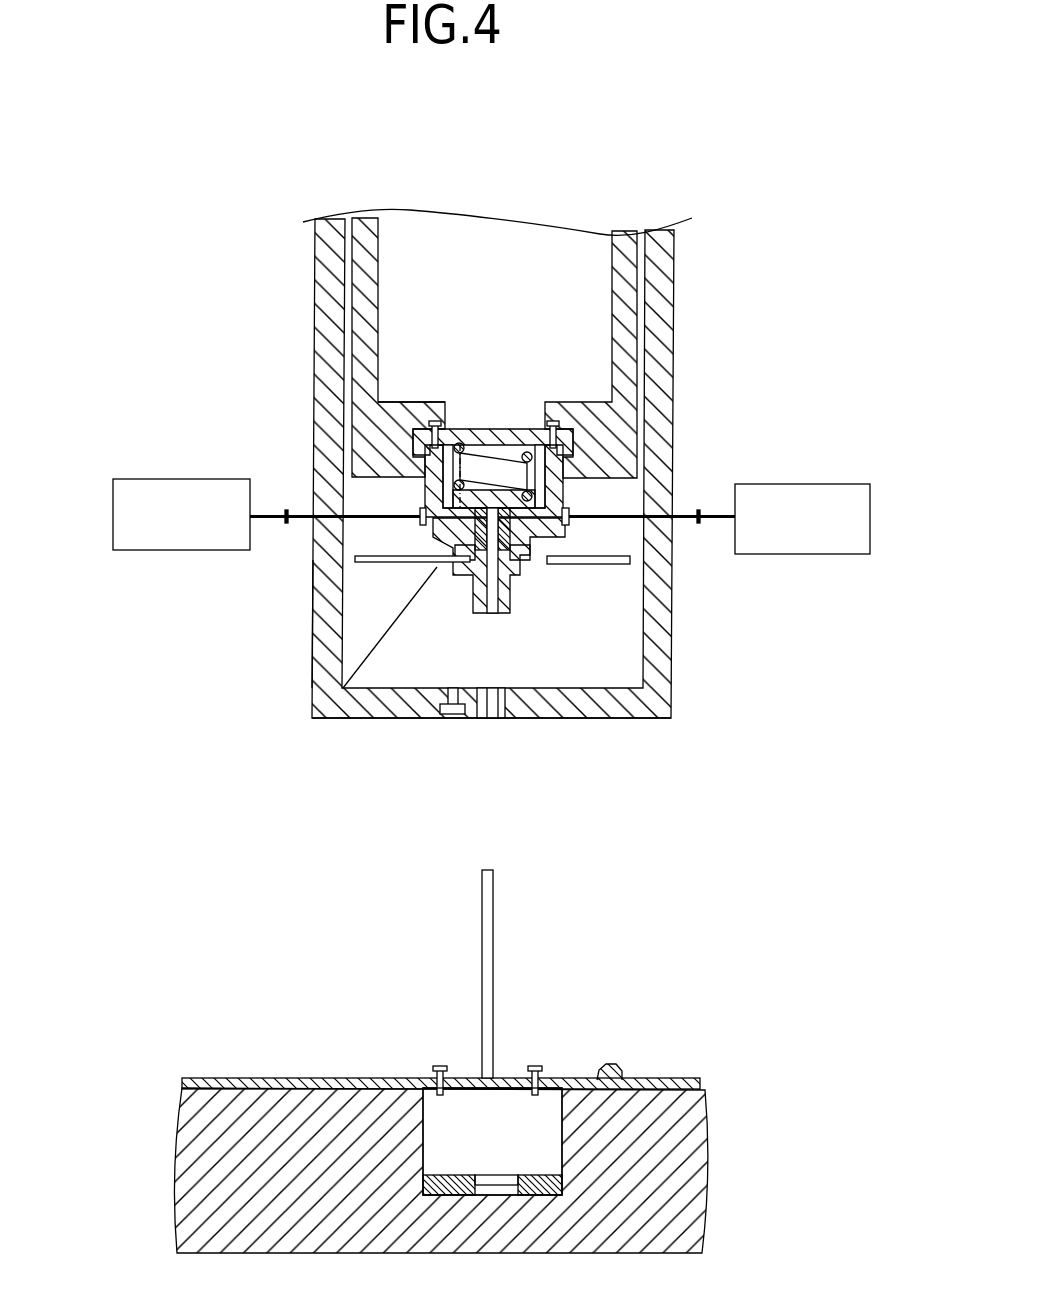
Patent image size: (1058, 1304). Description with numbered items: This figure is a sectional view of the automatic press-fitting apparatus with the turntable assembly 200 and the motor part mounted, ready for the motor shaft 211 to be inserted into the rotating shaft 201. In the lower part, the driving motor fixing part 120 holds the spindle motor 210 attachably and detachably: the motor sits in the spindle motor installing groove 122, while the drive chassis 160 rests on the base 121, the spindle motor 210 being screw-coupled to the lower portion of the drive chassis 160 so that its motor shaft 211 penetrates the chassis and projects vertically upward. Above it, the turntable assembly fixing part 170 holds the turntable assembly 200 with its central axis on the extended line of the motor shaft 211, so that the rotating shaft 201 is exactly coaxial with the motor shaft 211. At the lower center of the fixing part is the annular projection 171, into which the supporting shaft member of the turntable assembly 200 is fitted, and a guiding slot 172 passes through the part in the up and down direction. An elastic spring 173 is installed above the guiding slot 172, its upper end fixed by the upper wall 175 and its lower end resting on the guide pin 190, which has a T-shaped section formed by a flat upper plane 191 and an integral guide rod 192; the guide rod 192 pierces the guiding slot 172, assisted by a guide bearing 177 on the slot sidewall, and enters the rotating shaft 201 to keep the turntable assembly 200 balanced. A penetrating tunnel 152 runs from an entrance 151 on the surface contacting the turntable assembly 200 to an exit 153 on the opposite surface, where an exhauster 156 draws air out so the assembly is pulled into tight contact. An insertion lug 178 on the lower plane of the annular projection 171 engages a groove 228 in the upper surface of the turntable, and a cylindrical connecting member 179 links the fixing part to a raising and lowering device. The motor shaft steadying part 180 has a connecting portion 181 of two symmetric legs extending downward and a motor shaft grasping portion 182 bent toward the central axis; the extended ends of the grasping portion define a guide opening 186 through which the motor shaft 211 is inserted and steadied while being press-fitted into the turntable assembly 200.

The driving motor fixing part 120 is at (153, 1163).
The base 121 is at (702, 1224).
The spindle motor installing groove 122 is at (565, 1160).
The entrance 151 is at (314, 702).
The penetrating tunnel 152 is at (314, 660).
The exit 153 is at (378, 520).
The exhauster 156 is at (852, 556).
The drive chassis 160 is at (232, 1078).
The turntable assembly fixing part 170 is at (352, 327).
The annular projection 171 is at (540, 533).
The guiding slot 172 is at (548, 568).
The elastic spring 173 is at (563, 492).
The upper wall 175 is at (488, 430).
The guide bearing 177 is at (560, 560).
The insertion lug 178 is at (530, 590).
The cylindrical connecting member 179 is at (633, 272).
The motor shaft steadying part 180 is at (702, 618).
The connecting portion 181 is at (675, 372).
The motor shaft grasping portion 182 is at (637, 718).
The guide opening 186 is at (455, 718).
The guide pin 190 is at (315, 617).
The upper plane 191 is at (345, 429).
The guide rod 192 is at (490, 572).
The turntable assembly 200 is at (368, 569).
The rotating shaft 201 is at (492, 617).
The spindle motor 210 is at (563, 1120).
The motor shaft 211 is at (494, 935).
The groove 228 is at (510, 575).